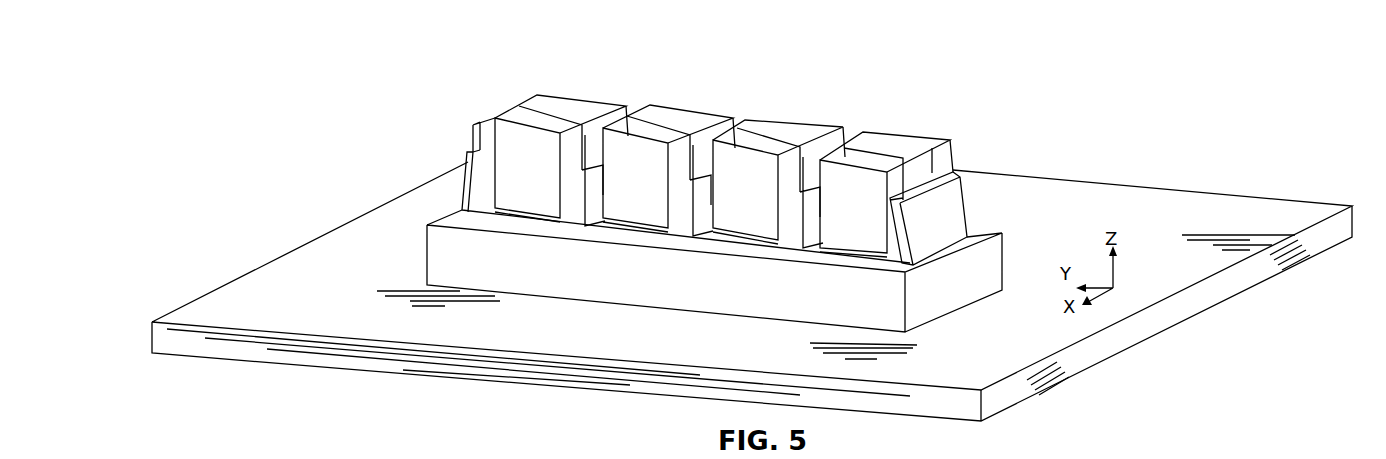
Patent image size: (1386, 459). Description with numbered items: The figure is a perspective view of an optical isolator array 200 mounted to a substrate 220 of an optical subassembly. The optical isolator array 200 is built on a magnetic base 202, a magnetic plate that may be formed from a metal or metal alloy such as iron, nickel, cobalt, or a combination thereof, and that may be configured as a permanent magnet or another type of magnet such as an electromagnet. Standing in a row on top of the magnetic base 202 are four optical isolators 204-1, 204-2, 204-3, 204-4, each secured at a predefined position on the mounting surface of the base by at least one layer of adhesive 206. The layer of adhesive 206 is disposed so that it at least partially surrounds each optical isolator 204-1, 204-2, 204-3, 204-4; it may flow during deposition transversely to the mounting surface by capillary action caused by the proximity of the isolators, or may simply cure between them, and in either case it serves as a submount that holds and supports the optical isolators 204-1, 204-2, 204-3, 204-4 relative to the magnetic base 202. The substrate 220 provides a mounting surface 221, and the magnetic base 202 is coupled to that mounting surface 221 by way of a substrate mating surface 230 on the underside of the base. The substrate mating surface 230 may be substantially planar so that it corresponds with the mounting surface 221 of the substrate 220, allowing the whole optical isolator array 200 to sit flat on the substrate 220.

The optical isolator array 200 is at (481, 100).
The magnetic base 202 is at (1000, 272).
The optical isolator 204-1 is at (577, 79).
The optical isolator 204-2 is at (683, 110).
The optical isolator 204-3 is at (791, 121).
The optical isolator 204-4 is at (886, 131).
The layer of adhesive 206 is at (955, 207).
The substrate 220 is at (752, 259).
The mounting surface 221 is at (1086, 205).
The substrate mating surface 230 is at (633, 312).